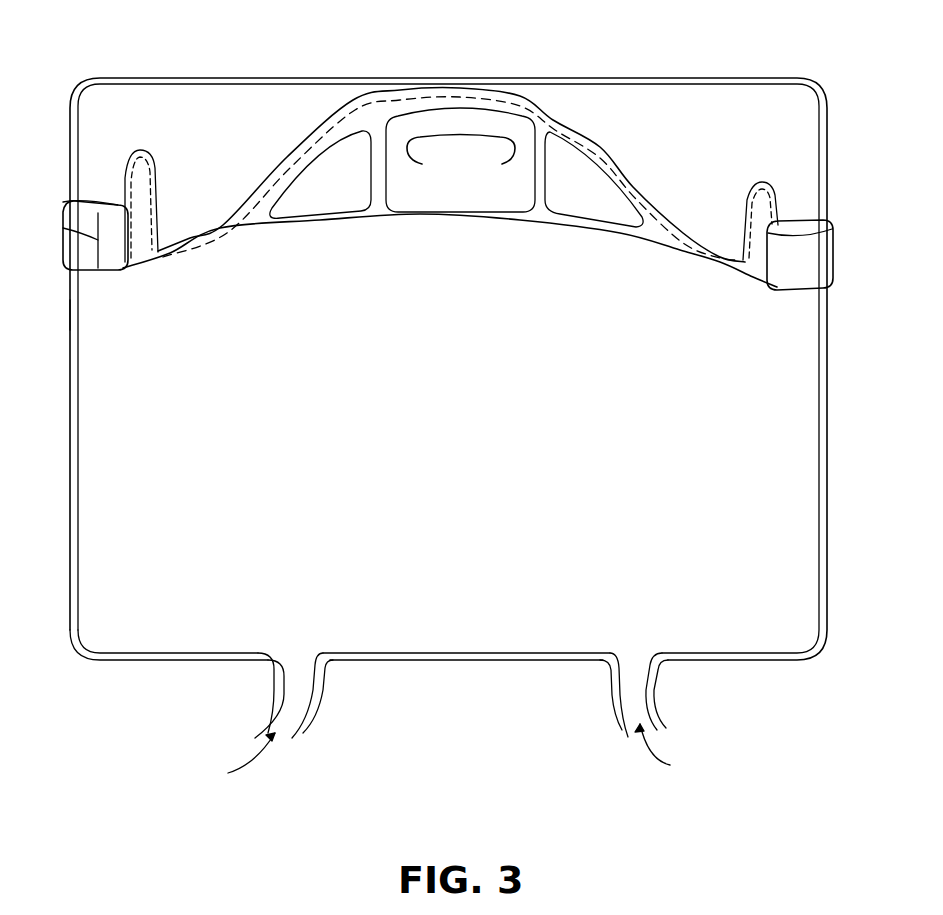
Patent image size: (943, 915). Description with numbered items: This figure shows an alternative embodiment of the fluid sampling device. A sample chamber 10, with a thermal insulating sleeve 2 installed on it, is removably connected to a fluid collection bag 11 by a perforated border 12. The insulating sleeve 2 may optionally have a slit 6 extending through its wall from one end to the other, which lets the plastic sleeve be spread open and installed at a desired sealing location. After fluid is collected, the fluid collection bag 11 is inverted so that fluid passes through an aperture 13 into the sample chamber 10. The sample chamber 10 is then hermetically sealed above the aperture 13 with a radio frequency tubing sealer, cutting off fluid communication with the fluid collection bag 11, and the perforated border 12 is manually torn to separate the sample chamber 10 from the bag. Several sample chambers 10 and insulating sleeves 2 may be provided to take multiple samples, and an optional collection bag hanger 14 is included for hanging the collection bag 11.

The thermal insulating sleeve 2 is at (77, 250).
The slit 6 is at (95, 238).
The sample chamber 10 is at (250, 112).
The fluid collection bag 11 is at (213, 572).
The perforated border 12 is at (500, 98).
The aperture 13 is at (103, 282).
The collection bag hanger 14 is at (457, 155).